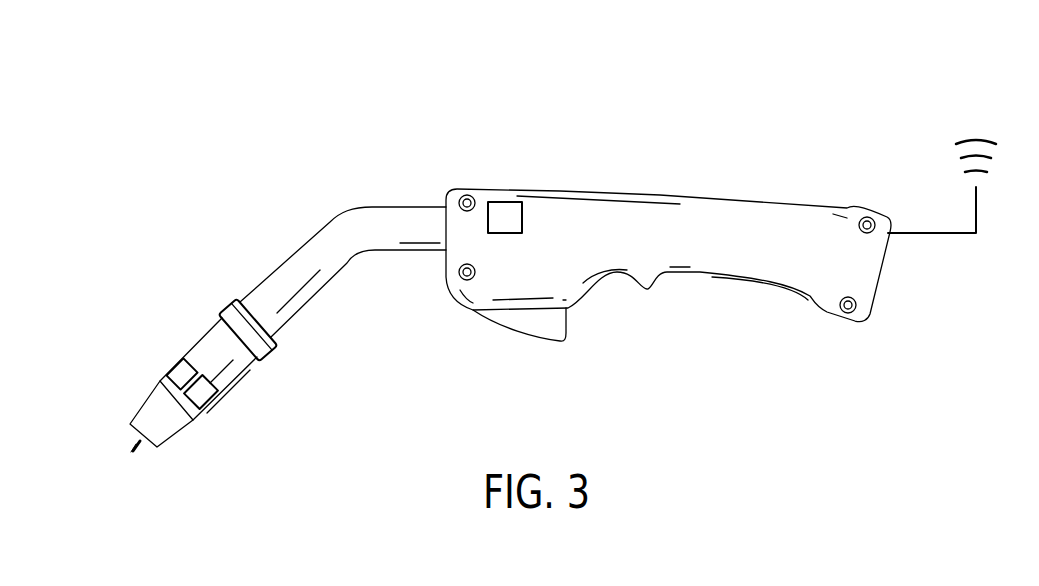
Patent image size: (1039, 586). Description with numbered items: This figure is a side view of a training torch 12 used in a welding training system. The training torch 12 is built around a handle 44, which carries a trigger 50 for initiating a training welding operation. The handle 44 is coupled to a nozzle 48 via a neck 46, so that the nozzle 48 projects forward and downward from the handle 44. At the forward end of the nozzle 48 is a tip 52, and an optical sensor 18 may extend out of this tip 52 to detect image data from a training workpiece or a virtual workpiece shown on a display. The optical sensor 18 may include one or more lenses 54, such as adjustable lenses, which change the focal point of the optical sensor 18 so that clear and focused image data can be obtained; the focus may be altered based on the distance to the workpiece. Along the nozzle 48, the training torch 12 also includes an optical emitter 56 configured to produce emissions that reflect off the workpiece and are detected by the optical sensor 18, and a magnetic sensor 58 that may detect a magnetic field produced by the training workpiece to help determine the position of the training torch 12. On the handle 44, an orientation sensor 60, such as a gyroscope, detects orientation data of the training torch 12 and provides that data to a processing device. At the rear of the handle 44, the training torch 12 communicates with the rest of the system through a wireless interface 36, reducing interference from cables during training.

The training torch 12 is at (523, 60).
The optical sensor 18 is at (138, 447).
The wireless interface 36 is at (930, 233).
The handle 44 is at (676, 222).
The neck 46 is at (283, 268).
The nozzle 48 is at (188, 352).
The trigger 50 is at (528, 318).
The tip 52 is at (140, 447).
The lenses 54 is at (132, 450).
The optical emitter 56 is at (210, 405).
The magnetic sensor 58 is at (175, 367).
The orientation sensor 60 is at (505, 202).